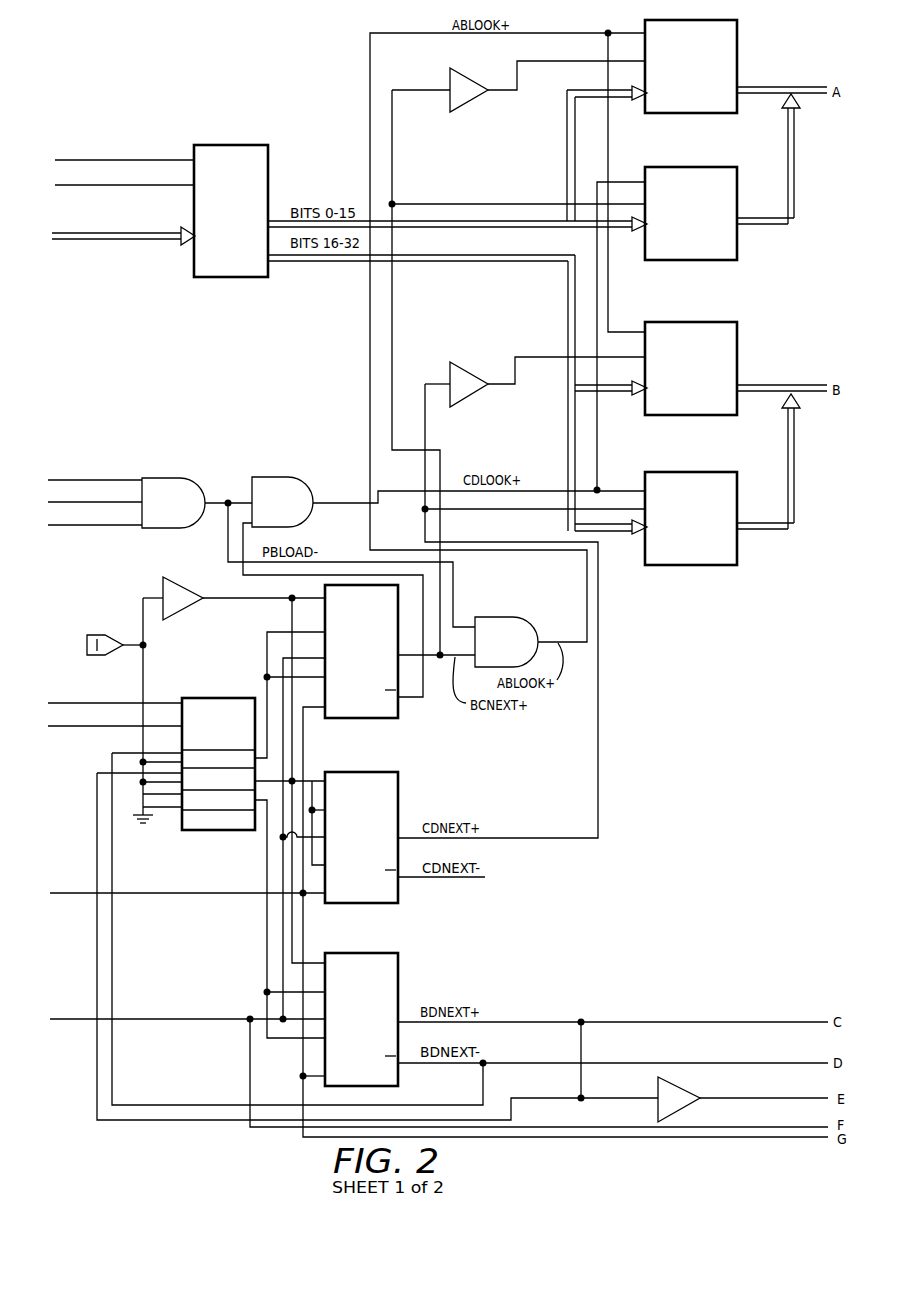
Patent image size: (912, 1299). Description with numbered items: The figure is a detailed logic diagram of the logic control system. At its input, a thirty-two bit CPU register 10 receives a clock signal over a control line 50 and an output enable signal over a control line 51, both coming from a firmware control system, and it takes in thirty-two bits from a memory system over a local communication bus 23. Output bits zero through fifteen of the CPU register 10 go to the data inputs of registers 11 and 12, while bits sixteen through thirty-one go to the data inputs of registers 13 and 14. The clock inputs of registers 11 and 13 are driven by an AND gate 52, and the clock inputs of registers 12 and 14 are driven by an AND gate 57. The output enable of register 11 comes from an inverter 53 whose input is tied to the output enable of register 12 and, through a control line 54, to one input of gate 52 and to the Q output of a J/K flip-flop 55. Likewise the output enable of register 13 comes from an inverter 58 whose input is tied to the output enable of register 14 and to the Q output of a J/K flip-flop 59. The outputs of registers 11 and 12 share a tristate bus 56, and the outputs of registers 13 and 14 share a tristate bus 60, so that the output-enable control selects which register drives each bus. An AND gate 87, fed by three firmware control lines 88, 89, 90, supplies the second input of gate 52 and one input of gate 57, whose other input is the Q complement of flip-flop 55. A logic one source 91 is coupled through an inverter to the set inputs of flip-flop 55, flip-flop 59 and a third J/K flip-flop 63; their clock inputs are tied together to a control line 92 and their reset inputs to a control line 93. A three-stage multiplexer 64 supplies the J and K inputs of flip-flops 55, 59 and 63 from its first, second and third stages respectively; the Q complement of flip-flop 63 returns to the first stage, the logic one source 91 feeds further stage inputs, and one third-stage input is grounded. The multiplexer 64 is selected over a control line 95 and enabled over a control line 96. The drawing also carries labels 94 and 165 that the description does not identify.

The CPU register 10 is at (255, 145).
The register 11 is at (719, 20).
The register 12 is at (719, 167).
The register 13 is at (719, 322).
The register 14 is at (719, 472).
The local communication bus 23 is at (142, 236).
The control line 50 is at (169, 160).
The control line 51 is at (160, 172).
The AND gate 52 is at (513, 618).
The inverter 53 is at (468, 74).
The control line 54 is at (392, 318).
The J/K flip-flop 55 is at (396, 718).
The tristate bus 56 is at (787, 86).
The AND gate 57 is at (298, 480).
The inverter 58 is at (470, 371).
The J/K flip-flop 59 is at (392, 775).
The tristate bus 60 is at (786, 386).
The J/K flip-flop 63 is at (384, 955).
The multiplexer 64 is at (223, 698).
The AND gate 87 is at (187, 480).
The control line 88 is at (122, 480).
The control line 89 is at (132, 502).
The control line 90 is at (128, 525).
The logic one source 91 is at (98, 636).
The control line 92 is at (189, 1021).
The control line 93 is at (183, 900).
The line crossover 94 is at (284, 831).
The control line 95 is at (129, 703).
The control line 96 is at (96, 728).
The buffer 165 is at (681, 1093).